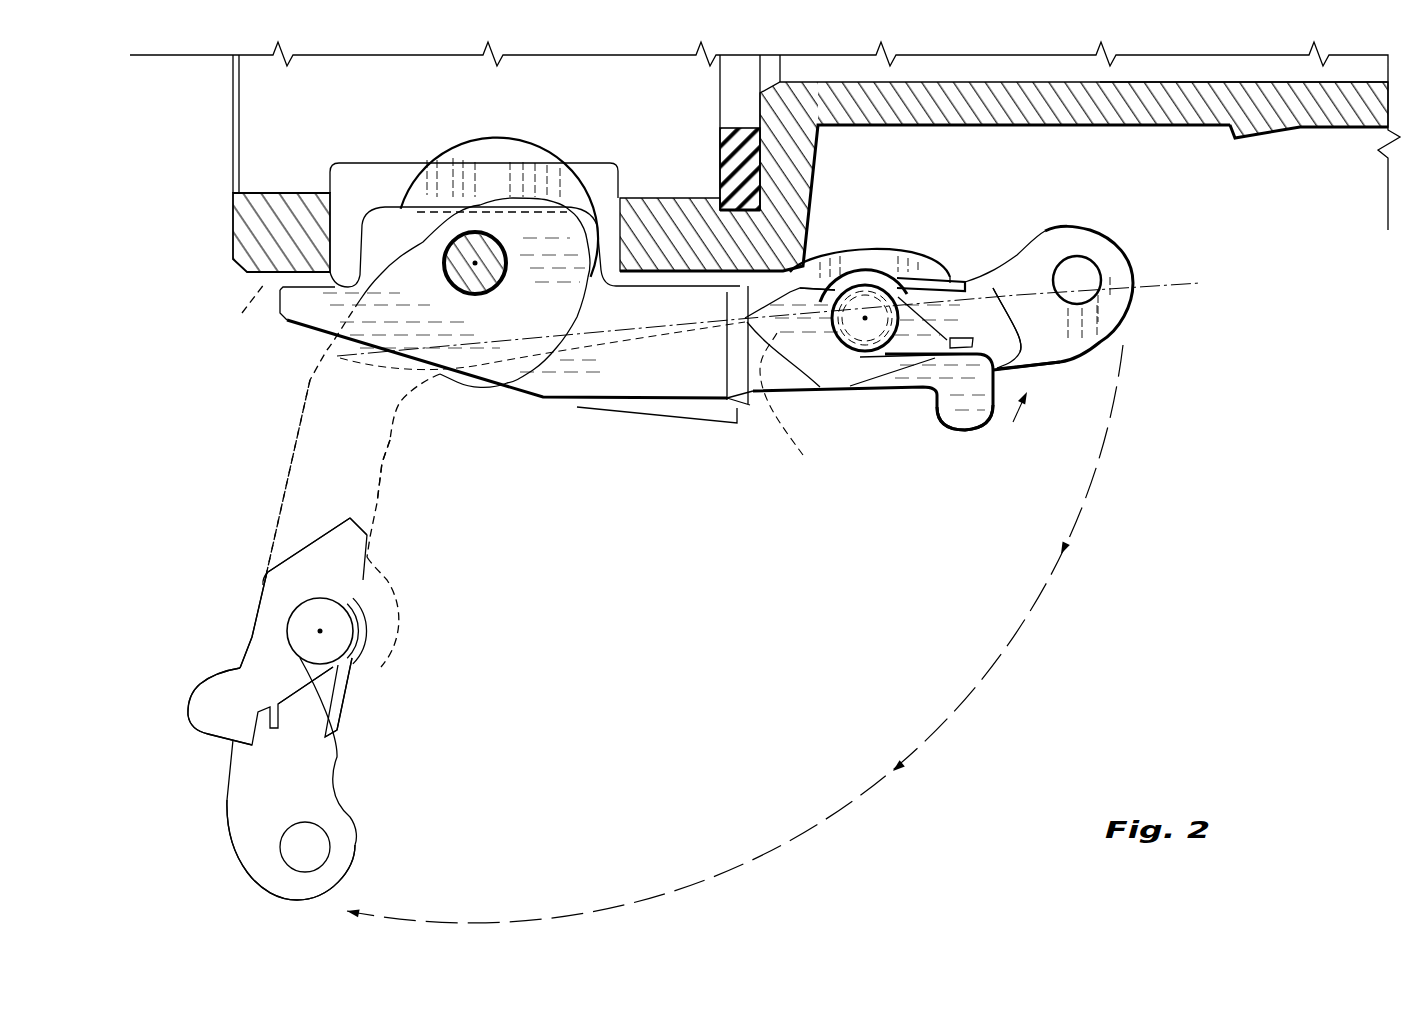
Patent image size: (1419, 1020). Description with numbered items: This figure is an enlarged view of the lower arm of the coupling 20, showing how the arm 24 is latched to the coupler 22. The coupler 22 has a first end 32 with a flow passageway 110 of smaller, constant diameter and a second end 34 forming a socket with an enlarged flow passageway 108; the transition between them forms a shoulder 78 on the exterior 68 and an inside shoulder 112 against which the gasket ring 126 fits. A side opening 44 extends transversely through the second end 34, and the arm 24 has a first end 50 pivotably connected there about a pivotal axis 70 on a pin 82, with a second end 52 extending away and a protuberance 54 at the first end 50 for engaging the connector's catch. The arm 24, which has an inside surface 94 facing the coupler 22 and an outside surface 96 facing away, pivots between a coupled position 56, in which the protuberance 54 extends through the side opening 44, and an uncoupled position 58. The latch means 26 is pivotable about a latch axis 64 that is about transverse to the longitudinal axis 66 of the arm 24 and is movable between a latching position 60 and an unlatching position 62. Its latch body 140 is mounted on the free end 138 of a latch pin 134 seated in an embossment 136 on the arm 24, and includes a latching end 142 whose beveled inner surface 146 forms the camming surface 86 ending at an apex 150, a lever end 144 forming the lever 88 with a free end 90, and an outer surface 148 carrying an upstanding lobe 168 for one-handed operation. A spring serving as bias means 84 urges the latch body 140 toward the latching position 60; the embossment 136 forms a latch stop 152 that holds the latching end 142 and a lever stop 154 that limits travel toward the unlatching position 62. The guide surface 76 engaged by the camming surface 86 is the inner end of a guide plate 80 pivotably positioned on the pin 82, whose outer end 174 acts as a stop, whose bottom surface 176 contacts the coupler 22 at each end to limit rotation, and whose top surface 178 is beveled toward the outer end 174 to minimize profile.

The coupling 20 is at (669, 634).
The coupler 22 is at (1204, 150).
The arm 24 is at (616, 565).
The latch means 26 is at (643, 333).
The first end 32 is at (1357, 110).
The second end 34 is at (258, 240).
The side opening 44 is at (333, 225).
The first end of the arm 50 is at (500, 178).
The second end of the arm 52 is at (1060, 345).
The protuberance 54 is at (487, 157).
The coupled position 56 is at (773, 393).
The uncoupled position 58 is at (367, 500).
The latching position 60 is at (813, 297).
The unlatching position 62 is at (817, 403).
The latch axis 64 is at (865, 320).
The longitudinal axis of the arm 66 is at (1187, 283).
The exterior of the coupler 68 is at (925, 198).
The pivotal axis of the arm 70 is at (470, 263).
The guide surface 76 is at (730, 350).
The shoulder 78 is at (818, 157).
The guide plate 80 is at (578, 392).
The pin 82 is at (477, 287).
The bias means 84 is at (950, 278).
The camming surface 86 is at (813, 292).
The lever 88 is at (559, 511).
The free end of the lever 90 is at (990, 383).
The inside surface 94 is at (383, 468).
The outside surface 96 is at (283, 488).
The enlarged flow passageway 108 is at (270, 193).
The flow passageway 110 is at (1186, 105).
The inside shoulder 112 is at (757, 108).
The gasket ring 126 is at (737, 140).
The latch pin 134 is at (401, 756).
The embossment 136 is at (860, 263).
The free end of the latch pin 138 is at (332, 750).
The latch body 140 is at (265, 627).
The latching end 142 is at (333, 540).
The lever end 144 is at (905, 390).
The inner surface 146 is at (993, 287).
The outer surface 148 is at (263, 588).
The apex 150 is at (352, 513).
The latch stop 152 is at (810, 277).
The lever stop 154 is at (952, 277).
The lobe 168 is at (970, 420).
The outer end 174 is at (283, 332).
The bottom surface 176 is at (660, 286).
The top surface 178 is at (633, 403).